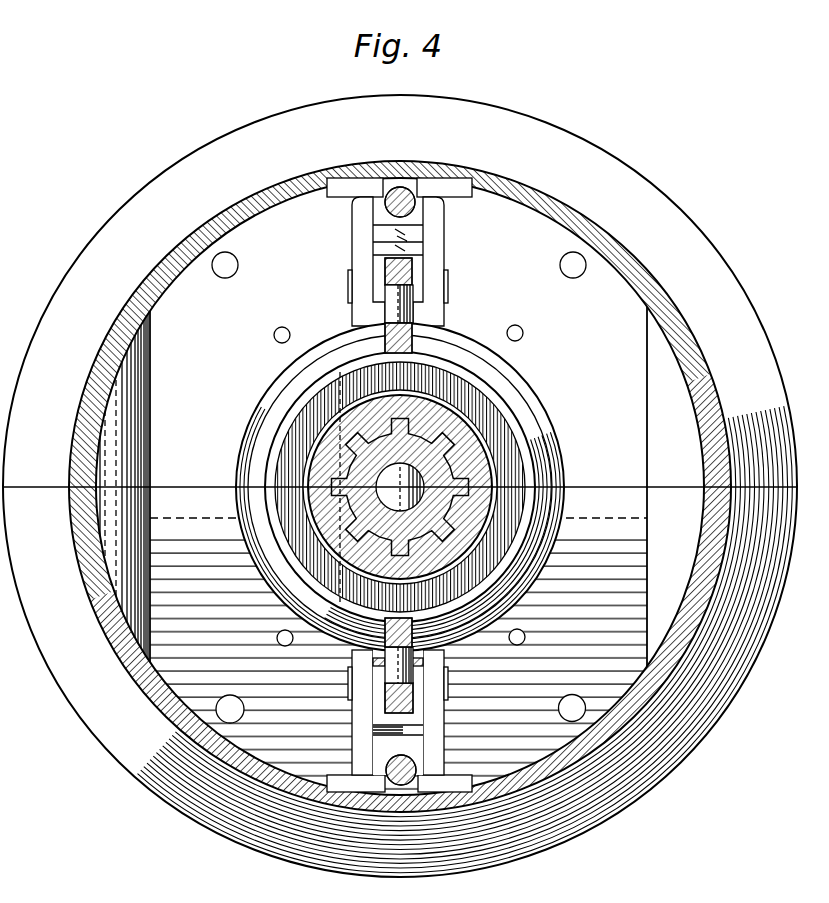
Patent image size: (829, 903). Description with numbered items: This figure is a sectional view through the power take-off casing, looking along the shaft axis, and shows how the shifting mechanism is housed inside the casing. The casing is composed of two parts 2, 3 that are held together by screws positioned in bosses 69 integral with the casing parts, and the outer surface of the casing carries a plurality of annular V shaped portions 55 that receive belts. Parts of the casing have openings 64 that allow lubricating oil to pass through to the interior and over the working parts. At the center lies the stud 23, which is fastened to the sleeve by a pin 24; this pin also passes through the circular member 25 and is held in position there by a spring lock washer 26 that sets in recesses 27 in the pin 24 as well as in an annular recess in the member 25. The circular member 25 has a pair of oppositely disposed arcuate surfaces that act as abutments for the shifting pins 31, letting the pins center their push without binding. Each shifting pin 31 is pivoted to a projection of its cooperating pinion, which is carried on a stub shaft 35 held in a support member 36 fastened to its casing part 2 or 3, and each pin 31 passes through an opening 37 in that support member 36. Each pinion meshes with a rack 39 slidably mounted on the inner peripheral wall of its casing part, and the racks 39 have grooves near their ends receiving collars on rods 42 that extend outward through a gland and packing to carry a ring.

The casing part 2 is at (148, 207).
The casing part 3 is at (85, 702).
The stud 23 is at (450, 470).
The pin 24 is at (393, 303).
The circular member 25 is at (518, 398).
The spring lock washer 26 is at (445, 364).
The recesses 27 is at (385, 335).
The shifting pins 31 is at (412, 277).
The stub shaft 35 is at (350, 283).
The support member 36 is at (363, 208).
The opening 37 is at (376, 268).
The rack 39 is at (415, 230).
The rods 42 is at (400, 187).
The annular V shaped portions 55 is at (706, 210).
The openings 64 is at (281, 327).
The bosses 69 is at (152, 500).